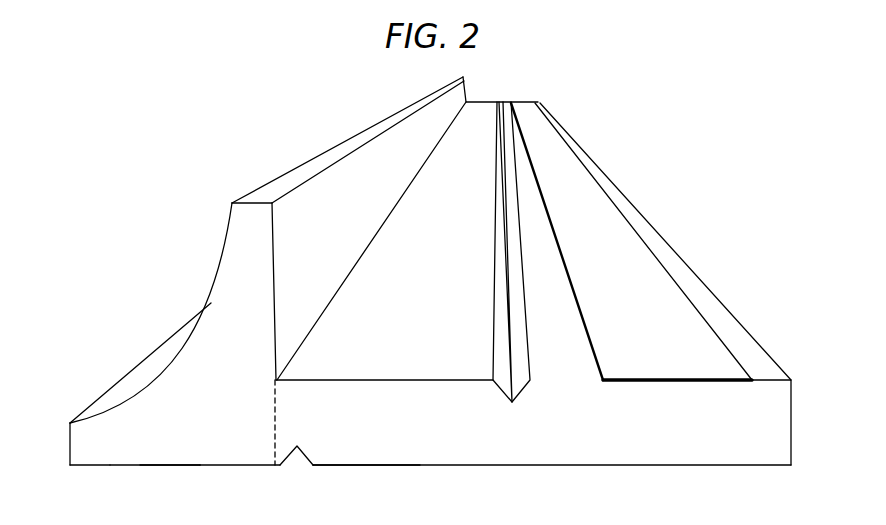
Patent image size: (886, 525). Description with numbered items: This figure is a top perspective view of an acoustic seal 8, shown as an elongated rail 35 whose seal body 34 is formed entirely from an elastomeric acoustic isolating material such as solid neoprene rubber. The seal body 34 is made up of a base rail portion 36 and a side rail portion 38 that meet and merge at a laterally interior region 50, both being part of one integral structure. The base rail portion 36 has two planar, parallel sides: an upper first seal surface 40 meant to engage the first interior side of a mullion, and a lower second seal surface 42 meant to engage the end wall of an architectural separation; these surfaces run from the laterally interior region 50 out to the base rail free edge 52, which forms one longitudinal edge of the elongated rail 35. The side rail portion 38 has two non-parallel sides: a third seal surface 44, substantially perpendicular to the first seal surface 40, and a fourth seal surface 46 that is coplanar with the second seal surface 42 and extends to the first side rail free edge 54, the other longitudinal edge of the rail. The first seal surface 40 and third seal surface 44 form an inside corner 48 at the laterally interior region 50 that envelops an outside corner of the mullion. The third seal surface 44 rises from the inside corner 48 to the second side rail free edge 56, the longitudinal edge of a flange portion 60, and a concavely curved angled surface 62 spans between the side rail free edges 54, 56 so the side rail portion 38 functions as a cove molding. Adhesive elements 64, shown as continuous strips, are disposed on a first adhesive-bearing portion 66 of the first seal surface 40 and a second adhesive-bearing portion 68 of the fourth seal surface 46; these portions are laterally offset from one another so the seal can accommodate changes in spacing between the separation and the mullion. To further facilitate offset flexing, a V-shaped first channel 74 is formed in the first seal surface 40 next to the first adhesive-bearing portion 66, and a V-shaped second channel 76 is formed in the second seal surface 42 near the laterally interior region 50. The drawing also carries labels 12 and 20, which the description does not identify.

The acoustic seal 8 is at (189, 135).
The sipe 12 is at (568, 278).
The tread block 20 is at (119, 351).
The seal body 34 is at (657, 230).
The elongated rail 35 is at (785, 370).
The base rail portion 36 is at (452, 457).
The side rail portion 38 is at (228, 466).
The first seal surface 40 is at (393, 380).
The second seal surface 42 is at (376, 467).
The third seal surface 44 is at (383, 207).
The fourth seal surface 46 is at (95, 466).
The inside corner 48 is at (307, 352).
The laterally interior region 50 is at (273, 420).
The base rail free edge 52 is at (793, 425).
The first side rail free edge 54 is at (70, 440).
The second side rail free edge 56 is at (300, 173).
The flange portion 60 is at (253, 331).
The angled surface 62 is at (223, 258).
The adhesive elements 64 is at (683, 380).
The first adhesive-bearing portion 66 is at (657, 385).
The second adhesive-bearing portion 68 is at (140, 466).
The first channel 74 is at (503, 382).
The second channel 76 is at (292, 458).